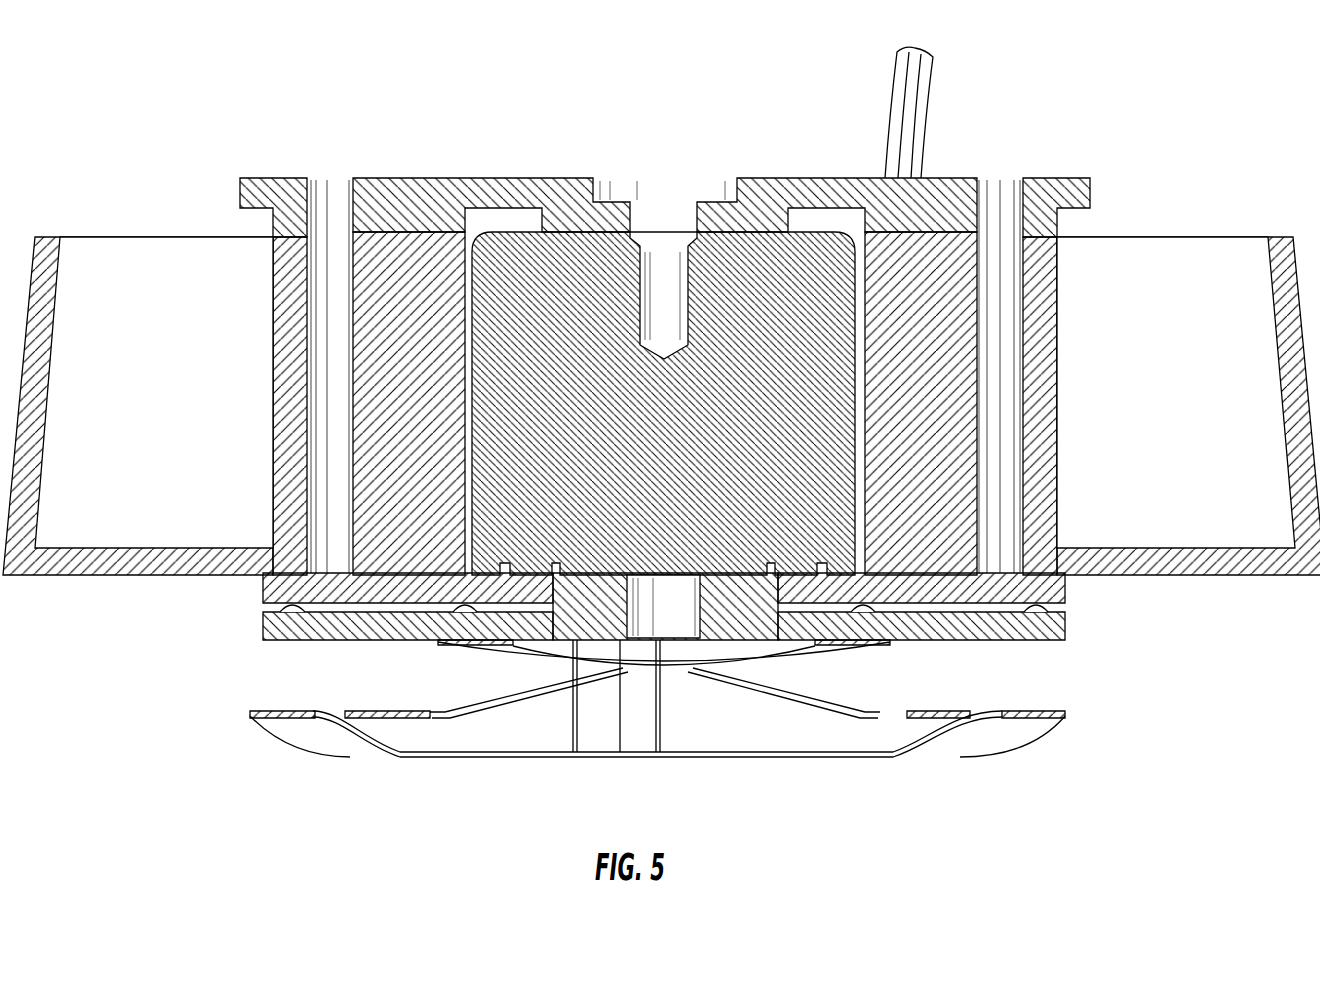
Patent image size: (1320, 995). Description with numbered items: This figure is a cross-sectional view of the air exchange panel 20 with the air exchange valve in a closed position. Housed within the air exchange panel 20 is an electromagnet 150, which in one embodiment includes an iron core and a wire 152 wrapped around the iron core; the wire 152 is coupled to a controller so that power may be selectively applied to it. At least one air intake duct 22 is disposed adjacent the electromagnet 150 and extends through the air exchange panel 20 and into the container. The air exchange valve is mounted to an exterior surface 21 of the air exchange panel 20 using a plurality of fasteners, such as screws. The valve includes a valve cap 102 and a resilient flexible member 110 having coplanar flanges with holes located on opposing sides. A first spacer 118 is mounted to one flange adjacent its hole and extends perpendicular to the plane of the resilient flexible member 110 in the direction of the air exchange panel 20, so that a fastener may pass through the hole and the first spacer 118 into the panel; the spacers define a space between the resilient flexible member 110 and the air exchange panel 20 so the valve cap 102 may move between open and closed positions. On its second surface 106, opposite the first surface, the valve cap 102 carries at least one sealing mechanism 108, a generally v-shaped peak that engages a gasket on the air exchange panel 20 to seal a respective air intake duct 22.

The air exchange panel 20 is at (222, 126).
The exterior surface 21 is at (143, 575).
The air intake duct 22 is at (327, 328).
The valve cap 102 is at (585, 618).
The second surface 106 is at (958, 607).
The sealing mechanism 108 is at (465, 605).
The resilient flexible member 110 is at (473, 757).
The first spacer 118 is at (635, 732).
The electromagnet 150 is at (540, 285).
The wire 152 is at (902, 135).